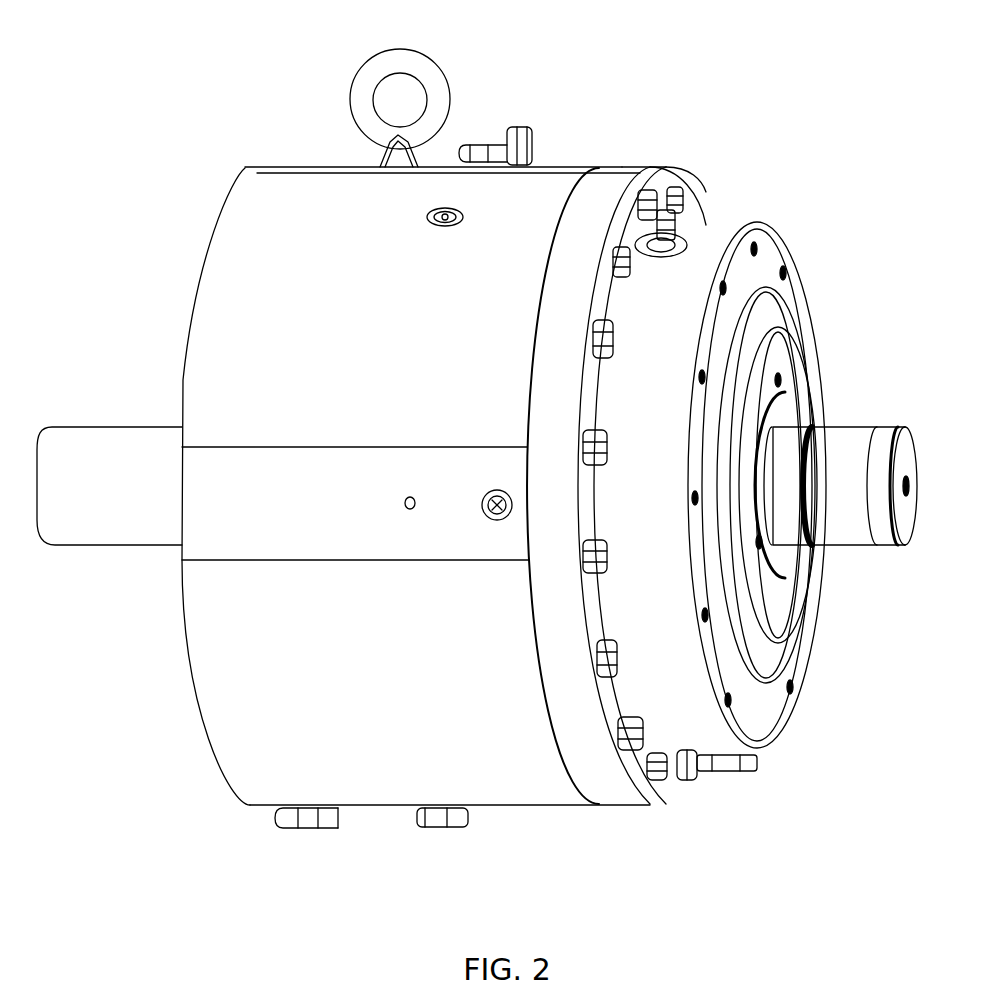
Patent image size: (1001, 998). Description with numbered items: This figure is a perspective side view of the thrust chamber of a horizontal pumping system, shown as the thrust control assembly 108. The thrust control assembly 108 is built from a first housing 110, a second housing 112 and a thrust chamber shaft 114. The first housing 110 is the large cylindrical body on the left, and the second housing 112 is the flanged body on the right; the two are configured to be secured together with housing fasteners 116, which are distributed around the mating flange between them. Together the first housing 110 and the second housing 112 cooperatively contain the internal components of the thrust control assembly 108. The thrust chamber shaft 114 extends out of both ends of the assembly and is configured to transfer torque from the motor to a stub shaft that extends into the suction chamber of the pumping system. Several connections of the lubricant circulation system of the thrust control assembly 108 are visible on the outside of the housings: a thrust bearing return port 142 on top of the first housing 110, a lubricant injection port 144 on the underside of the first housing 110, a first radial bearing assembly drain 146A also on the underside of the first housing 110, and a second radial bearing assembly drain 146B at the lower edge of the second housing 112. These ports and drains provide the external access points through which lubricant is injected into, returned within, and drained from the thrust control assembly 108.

The thrust control assembly 108 is at (639, 100).
The first housing 110 is at (263, 208).
The second housing 112 is at (695, 220).
The thrust chamber shaft 114 is at (140, 445).
The housing fasteners 116 is at (618, 242).
The thrust bearing return port 142 is at (497, 140).
The lubricant injection port 144 is at (432, 828).
The first radial bearing assembly drain 146A is at (308, 828).
The second radial bearing assembly drain 146B is at (757, 768).